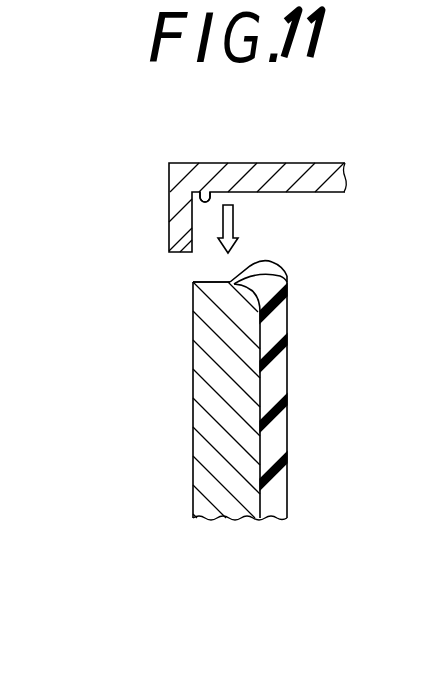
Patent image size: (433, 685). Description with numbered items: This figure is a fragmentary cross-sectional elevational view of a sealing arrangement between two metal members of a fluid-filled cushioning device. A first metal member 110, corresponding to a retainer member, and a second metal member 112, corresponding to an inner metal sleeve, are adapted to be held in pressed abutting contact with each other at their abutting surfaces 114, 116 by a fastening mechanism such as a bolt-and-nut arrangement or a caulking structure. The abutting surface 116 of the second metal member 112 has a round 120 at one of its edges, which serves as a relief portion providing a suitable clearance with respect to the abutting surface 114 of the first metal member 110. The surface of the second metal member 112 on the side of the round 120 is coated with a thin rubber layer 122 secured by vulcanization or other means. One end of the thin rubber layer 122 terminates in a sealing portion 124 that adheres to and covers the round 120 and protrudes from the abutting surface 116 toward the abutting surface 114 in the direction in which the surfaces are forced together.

The first metal member 110 is at (167, 185).
The second metal member 112 is at (192, 388).
The abutting surface 114 is at (202, 198).
The abutting surface 116 is at (213, 283).
The round 120 is at (270, 278).
The thin rubber layer 122 is at (277, 443).
The sealing portion 124 is at (262, 272).